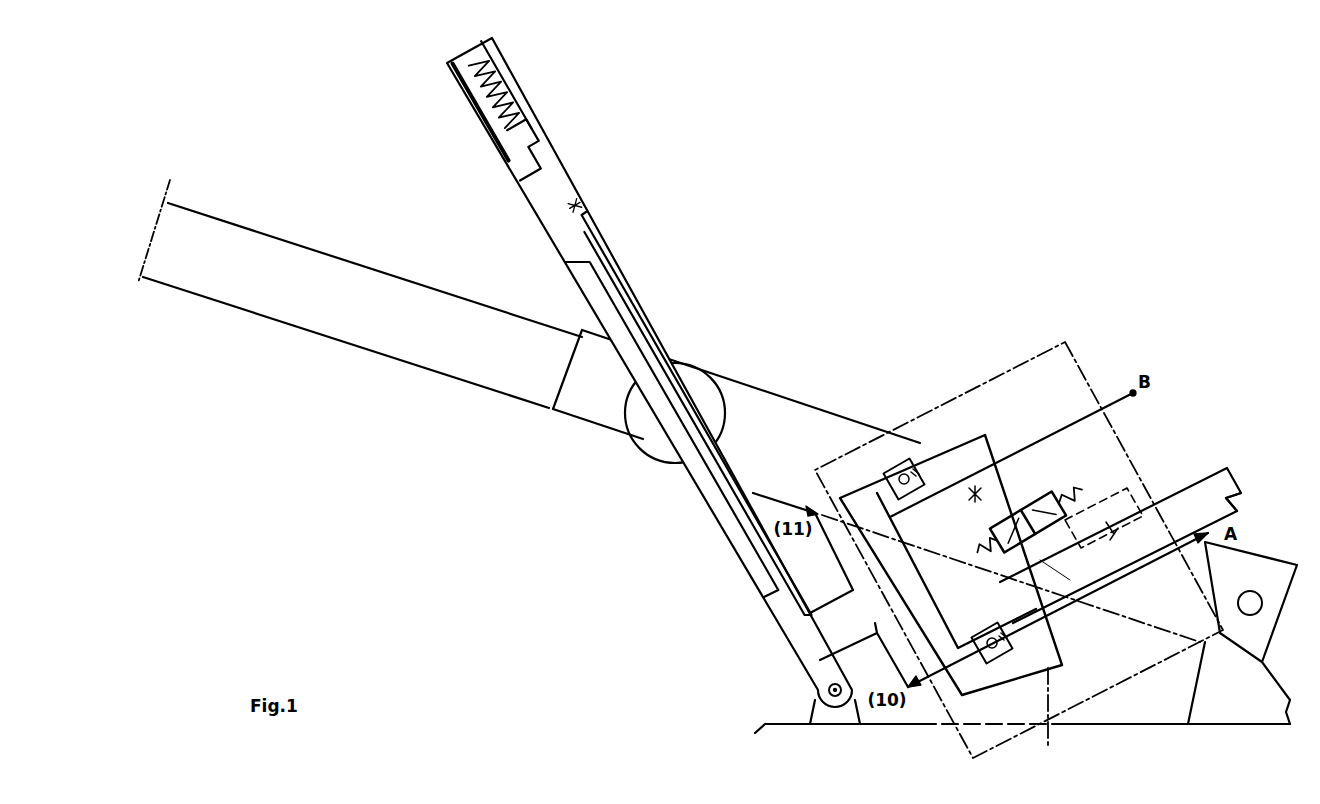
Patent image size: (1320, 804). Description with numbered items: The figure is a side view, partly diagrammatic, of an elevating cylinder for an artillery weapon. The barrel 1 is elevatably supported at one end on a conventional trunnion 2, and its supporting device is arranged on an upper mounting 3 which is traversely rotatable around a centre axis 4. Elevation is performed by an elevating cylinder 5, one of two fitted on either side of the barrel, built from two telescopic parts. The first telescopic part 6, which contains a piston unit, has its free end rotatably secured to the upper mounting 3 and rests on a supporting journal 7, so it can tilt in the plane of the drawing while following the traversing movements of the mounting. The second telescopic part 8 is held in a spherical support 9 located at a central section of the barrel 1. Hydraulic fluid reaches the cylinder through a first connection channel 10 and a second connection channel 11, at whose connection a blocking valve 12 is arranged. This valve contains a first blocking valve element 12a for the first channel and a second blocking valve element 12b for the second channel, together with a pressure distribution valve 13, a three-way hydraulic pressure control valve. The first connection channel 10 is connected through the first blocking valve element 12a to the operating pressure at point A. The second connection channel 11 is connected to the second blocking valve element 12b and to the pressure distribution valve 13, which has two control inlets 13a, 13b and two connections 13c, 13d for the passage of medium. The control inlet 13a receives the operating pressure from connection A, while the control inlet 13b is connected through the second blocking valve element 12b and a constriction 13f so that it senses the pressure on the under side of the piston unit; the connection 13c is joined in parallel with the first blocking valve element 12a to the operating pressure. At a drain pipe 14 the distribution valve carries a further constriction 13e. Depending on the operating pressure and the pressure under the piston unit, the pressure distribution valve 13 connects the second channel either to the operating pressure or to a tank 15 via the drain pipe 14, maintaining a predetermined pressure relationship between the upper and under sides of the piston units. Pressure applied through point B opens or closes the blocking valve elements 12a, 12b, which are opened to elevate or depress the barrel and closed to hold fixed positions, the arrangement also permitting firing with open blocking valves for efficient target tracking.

The barrel 1 is at (272, 237).
The trunnion 2 is at (1262, 603).
The upper mounting 3 is at (787, 720).
The centre axis 4 is at (1052, 697).
The elevating cylinder 5 is at (638, 280).
The first telescopic part 6 is at (723, 512).
The supporting journal 7 is at (836, 697).
The second telescopic part 8 is at (688, 480).
The spherical support 9 is at (702, 382).
The first connection channel 10 is at (773, 590).
The second connection channel 11 is at (717, 463).
The blocking valve 12 is at (976, 524).
The first blocking valve element 12a is at (1017, 637).
The second blocking valve element 12b is at (912, 460).
The pressure distribution valve 13 is at (1076, 509).
The control inlet 13a is at (1070, 496).
The control inlet 13b is at (987, 546).
The connection 13c is at (1087, 591).
The connection 13d is at (1028, 522).
The constriction 13e is at (1116, 534).
The constriction 13f is at (980, 487).
The drain pipe 14 is at (1173, 493).
The tank 15 is at (1240, 507).